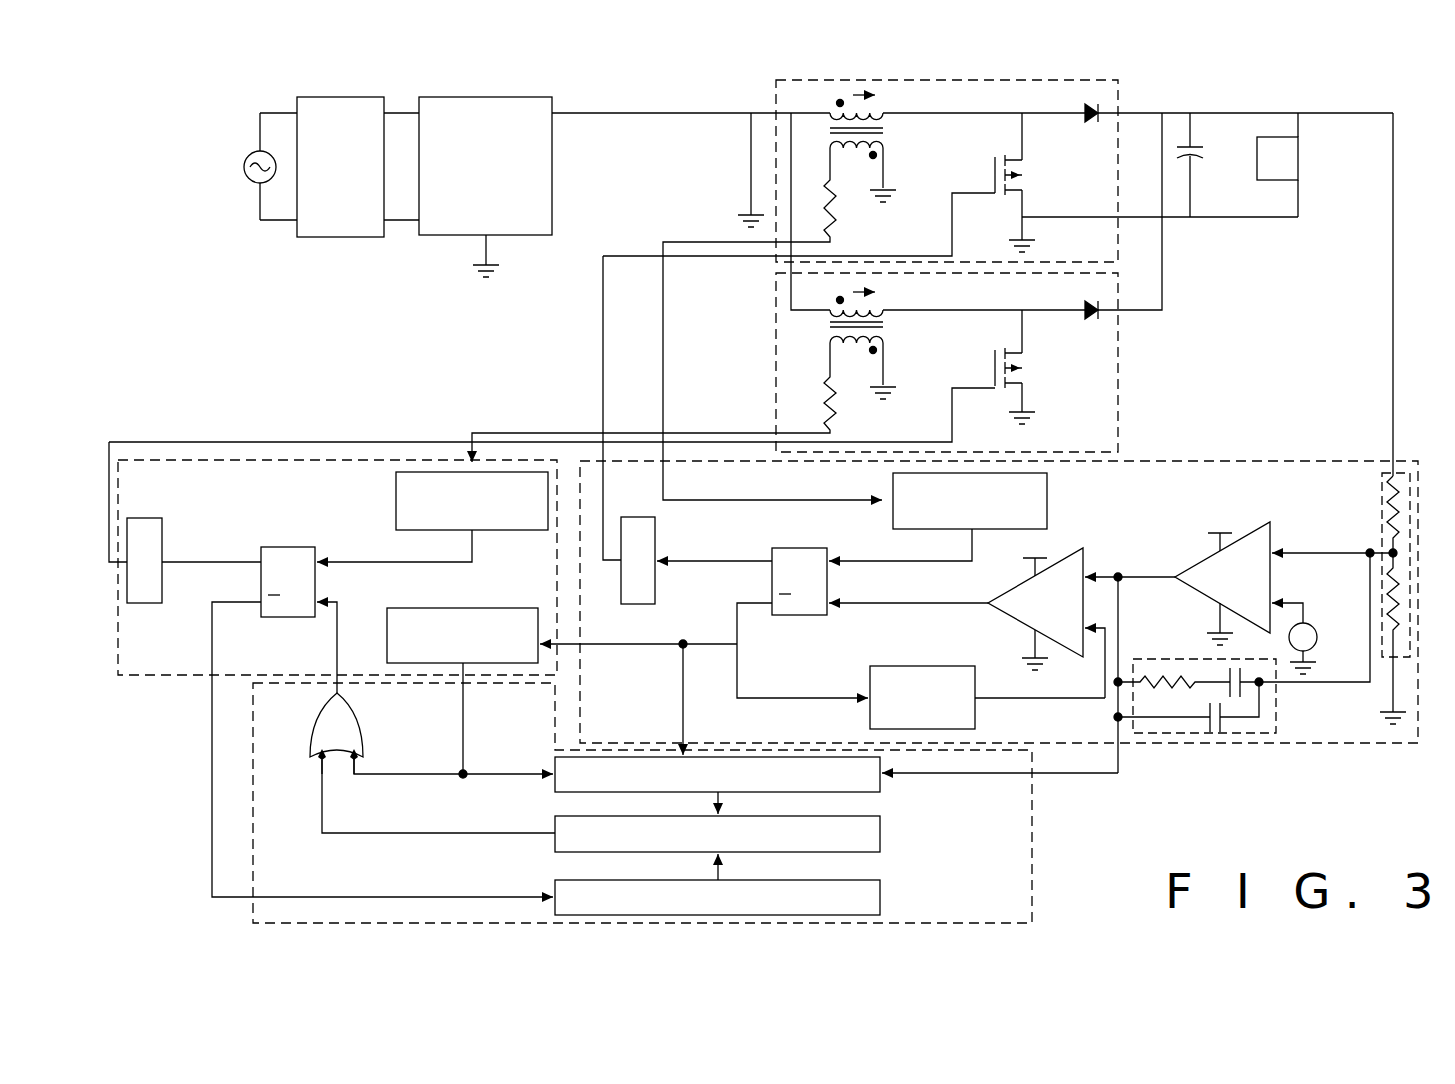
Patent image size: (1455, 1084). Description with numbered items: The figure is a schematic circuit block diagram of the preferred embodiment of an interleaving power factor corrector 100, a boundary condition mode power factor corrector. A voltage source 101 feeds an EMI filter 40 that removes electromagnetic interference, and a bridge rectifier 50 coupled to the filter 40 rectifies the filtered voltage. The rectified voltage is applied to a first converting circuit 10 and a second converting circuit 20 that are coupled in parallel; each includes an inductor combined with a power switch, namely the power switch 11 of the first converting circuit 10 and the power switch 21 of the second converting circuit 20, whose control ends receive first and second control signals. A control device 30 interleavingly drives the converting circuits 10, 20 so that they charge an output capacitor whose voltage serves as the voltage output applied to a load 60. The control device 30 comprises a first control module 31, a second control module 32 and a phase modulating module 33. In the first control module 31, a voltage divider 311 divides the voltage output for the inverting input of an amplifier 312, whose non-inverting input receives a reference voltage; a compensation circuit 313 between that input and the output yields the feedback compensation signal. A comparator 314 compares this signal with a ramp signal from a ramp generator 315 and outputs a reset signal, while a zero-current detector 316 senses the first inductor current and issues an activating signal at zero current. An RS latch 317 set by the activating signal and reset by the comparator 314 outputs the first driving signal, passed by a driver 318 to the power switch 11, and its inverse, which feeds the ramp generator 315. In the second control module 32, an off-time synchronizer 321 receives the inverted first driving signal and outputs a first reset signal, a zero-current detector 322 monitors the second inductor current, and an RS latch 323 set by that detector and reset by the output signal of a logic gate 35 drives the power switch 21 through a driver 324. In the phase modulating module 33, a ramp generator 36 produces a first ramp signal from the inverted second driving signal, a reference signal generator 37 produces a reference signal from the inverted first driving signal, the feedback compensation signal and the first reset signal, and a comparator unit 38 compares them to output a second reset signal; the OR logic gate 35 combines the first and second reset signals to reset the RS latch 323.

The interleaving power factor corrector 100 is at (228, 312).
The voltage source 101 is at (243, 167).
The EMI filter 40 is at (348, 237).
The bridge rectifier 50 is at (552, 227).
The first converting circuit 10 is at (1118, 96).
The power switch 11 is at (992, 178).
The second converting circuit 20 is at (1107, 395).
The power switch 21 is at (992, 378).
The load 60 is at (1270, 180).
The control device 30 is at (1410, 448).
The first control module 31 is at (1322, 745).
The voltage divider 311 is at (1382, 515).
The amplifier 312 is at (1198, 577).
The compensation circuit 313 is at (1253, 735).
The comparator 314 is at (1058, 568).
The ramp generator 315 is at (905, 666).
The zero-current detector 316 is at (1045, 513).
The RS latch 317 is at (788, 615).
The driver 318 is at (643, 517).
The second control module 32 is at (192, 666).
The off-time synchronizer 321 is at (470, 608).
The zero-current detector 322 is at (396, 515).
The RS latch 323 is at (272, 547).
The driver 324 is at (146, 518).
The phase modulating module 33 is at (1032, 875).
The logic gate 35 is at (318, 738).
The ramp generator 36 is at (880, 900).
The reference signal generator 37 is at (880, 788).
The comparator unit 38 is at (880, 838).